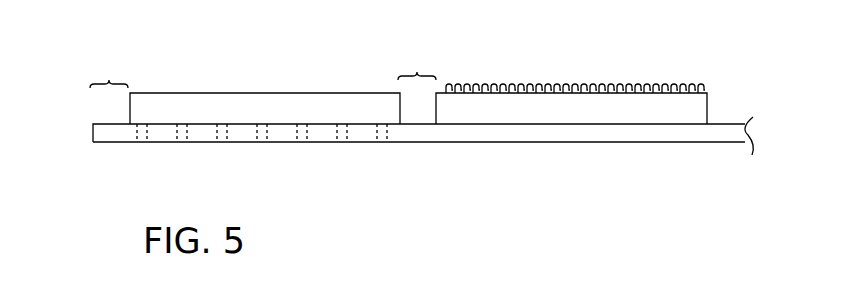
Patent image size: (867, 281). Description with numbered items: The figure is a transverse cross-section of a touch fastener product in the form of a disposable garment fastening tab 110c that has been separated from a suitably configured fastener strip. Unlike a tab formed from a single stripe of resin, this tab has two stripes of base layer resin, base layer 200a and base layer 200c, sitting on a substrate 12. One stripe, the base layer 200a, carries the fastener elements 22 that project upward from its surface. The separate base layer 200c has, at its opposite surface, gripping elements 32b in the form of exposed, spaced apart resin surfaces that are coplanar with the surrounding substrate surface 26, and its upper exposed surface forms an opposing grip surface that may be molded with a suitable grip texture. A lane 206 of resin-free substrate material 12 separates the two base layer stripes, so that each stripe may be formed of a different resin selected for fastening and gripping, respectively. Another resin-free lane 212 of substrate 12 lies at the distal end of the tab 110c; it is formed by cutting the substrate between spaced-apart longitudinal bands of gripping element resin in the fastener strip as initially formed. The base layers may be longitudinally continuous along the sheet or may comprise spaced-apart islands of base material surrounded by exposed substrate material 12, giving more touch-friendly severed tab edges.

The fastener tab 110c is at (227, 70).
The substrate 12 is at (732, 130).
The substrate surface 26 is at (482, 142).
The gripping elements 32b is at (142, 142).
The resin-free lane 212 is at (110, 71).
The base layer 200c is at (272, 93).
The lane 206 is at (420, 63).
The base layer 200a is at (708, 103).
The fastener elements 22 is at (590, 84).